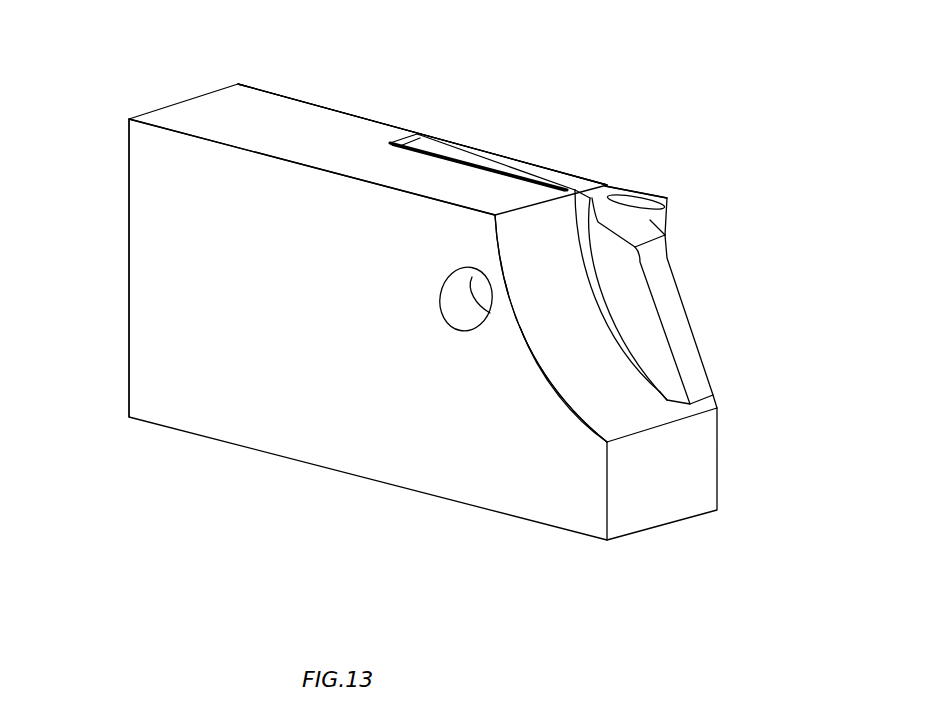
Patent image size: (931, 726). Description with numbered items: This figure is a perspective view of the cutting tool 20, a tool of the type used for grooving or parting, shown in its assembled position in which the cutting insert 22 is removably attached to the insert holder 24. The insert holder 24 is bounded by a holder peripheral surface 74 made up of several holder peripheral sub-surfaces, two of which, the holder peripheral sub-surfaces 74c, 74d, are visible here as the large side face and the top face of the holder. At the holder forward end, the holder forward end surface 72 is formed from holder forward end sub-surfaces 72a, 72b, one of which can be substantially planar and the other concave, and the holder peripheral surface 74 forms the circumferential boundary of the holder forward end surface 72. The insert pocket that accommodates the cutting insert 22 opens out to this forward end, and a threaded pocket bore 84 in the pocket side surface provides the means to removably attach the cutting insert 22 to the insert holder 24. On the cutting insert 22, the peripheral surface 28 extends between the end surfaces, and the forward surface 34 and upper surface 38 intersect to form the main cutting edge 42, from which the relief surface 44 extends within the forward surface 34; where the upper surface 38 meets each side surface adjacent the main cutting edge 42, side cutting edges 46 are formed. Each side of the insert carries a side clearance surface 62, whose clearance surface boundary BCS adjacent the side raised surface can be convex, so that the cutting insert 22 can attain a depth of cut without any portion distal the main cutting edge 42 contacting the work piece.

The cutting tool 20 is at (653, 62).
The cutting insert 22 is at (712, 313).
The insert holder 24 is at (150, 102).
The peripheral surface 28 is at (468, 153).
The forward surface 34 is at (687, 357).
The upper surface 38 is at (447, 150).
The main cutting edge 42 is at (662, 203).
The relief surface 44 is at (660, 230).
The side cutting edges 46 is at (610, 190).
The side clearance surface 62 is at (637, 307).
The holder forward end surface 72 is at (580, 402).
The holder forward end sub-surface 72a is at (608, 413).
The holder forward end sub-surface 72b is at (678, 477).
The holder peripheral surface 74 is at (254, 112).
The holder peripheral sub-surface 74c is at (160, 215).
The holder peripheral sub-surface 74d is at (313, 120).
The threaded pocket bore 84 is at (448, 320).
The clearance surface boundary BCS is at (657, 390).